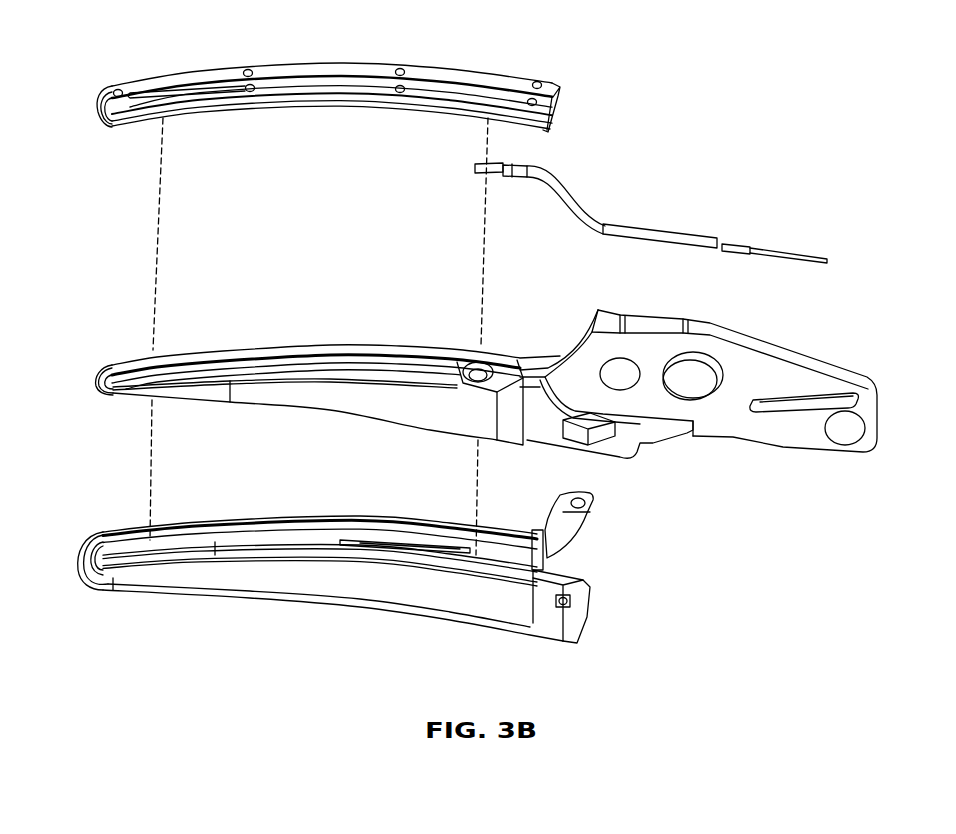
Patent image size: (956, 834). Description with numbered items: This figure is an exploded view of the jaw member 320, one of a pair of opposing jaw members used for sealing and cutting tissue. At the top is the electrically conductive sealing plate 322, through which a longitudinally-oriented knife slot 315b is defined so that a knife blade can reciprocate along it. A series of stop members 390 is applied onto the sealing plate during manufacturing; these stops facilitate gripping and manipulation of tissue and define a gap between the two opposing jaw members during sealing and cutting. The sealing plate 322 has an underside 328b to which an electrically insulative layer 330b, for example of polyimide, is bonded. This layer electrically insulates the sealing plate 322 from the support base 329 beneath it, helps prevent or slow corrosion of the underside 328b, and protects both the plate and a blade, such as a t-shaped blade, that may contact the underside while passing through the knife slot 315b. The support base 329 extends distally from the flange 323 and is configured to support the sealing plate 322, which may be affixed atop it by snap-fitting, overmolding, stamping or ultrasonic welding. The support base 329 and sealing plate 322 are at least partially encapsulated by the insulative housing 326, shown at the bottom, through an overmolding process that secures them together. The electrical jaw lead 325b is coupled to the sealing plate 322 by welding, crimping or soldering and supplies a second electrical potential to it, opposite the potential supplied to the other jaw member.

The jaw member 320 is at (674, 126).
The sealing plate 322 is at (372, 72).
The knife slot 315b is at (462, 87).
The electrically insulative layer 330b is at (556, 102).
The underside 328b is at (345, 114).
The stop members 390 is at (118, 90).
The electrical jaw lead 325b is at (632, 234).
The support base 329 is at (292, 342).
The flange 323 is at (792, 357).
The insulative housing 326 is at (330, 595).